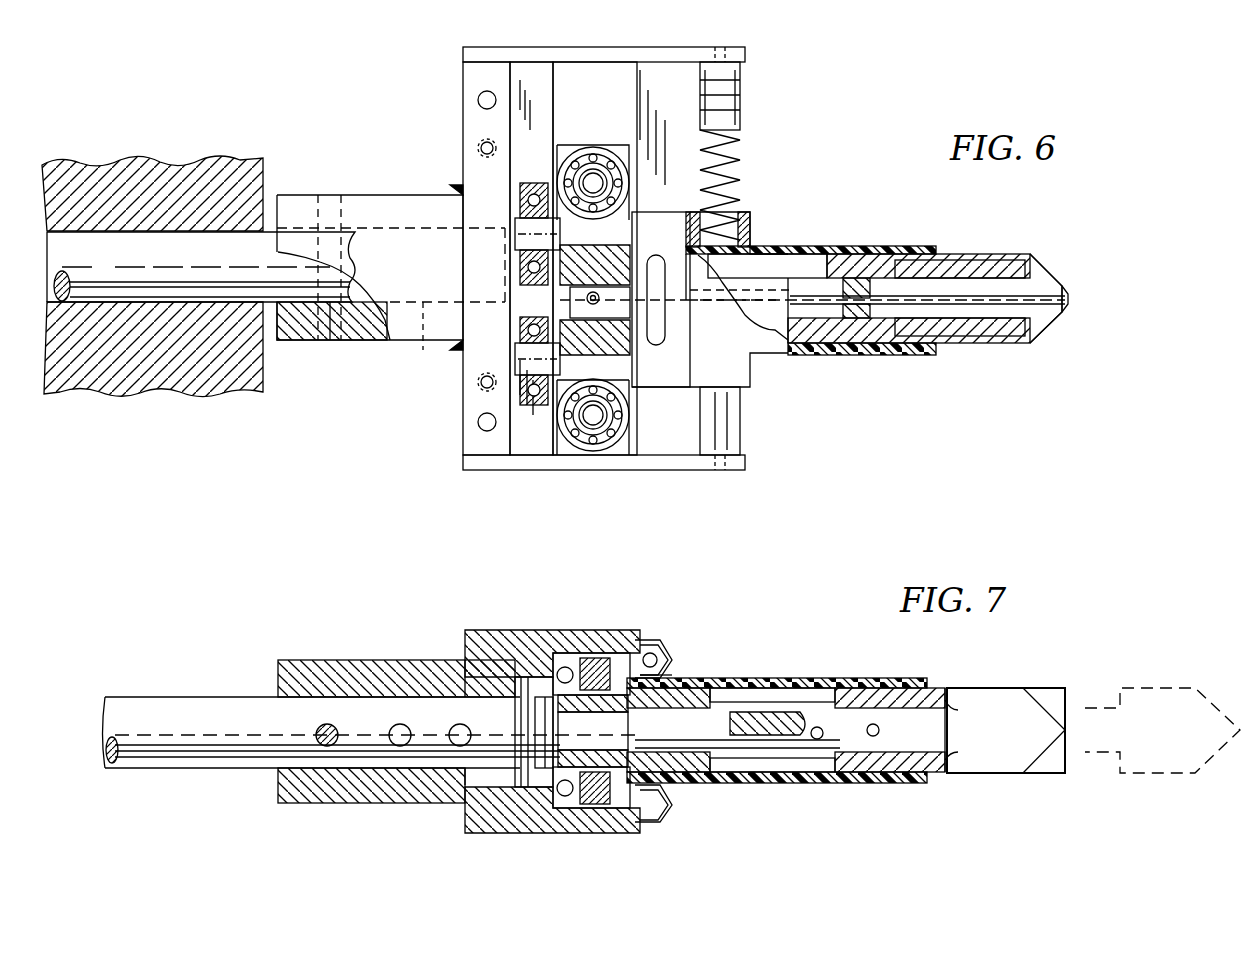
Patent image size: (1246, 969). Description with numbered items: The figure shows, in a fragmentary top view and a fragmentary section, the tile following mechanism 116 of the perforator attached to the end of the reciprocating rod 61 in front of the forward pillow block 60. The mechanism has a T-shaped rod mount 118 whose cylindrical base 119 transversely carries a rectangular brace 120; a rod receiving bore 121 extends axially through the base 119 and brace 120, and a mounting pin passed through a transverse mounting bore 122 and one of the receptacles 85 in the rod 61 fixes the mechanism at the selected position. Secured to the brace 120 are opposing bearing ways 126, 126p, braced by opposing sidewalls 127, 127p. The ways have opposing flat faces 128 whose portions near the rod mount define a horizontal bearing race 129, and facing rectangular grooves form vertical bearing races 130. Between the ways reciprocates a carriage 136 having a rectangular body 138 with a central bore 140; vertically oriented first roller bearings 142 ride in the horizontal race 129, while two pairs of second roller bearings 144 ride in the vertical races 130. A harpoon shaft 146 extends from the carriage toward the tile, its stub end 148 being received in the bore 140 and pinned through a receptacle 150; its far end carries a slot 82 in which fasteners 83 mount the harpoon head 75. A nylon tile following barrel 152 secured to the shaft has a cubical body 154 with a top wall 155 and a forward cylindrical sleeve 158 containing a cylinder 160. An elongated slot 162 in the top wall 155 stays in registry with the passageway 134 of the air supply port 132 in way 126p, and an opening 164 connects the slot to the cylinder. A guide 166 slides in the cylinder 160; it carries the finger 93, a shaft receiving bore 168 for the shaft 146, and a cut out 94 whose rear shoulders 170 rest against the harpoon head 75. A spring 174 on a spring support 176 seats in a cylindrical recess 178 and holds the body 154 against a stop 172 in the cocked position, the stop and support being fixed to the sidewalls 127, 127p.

In FIG. 6, the forward pillow block 60 is at (272, 385).
In FIG. 6, the reciprocating rod 61 is at (201, 267).
In FIG. 6, the tile following mechanism 116 is at (428, 118).
In FIG. 6, the T-shaped rod mount 118 is at (378, 195).
In FIG. 6, the cylindrical base 119 is at (300, 190).
In FIG. 7, the cylindrical base 119 is at (300, 660).
In FIG. 6, the rectangular brace 120 is at (460, 160).
In FIG. 7, the rectangular brace 120 is at (468, 785).
In FIG. 6, the rod receiving bore 121 is at (425, 350).
In FIG. 7, the rod receiving bore 121 is at (310, 803).
In FIG. 6, the mounting bore 122 is at (325, 340).
In FIG. 6, the sidewall 127 is at (620, 470).
In FIG. 6, the sidewall 127p is at (660, 47).
In FIG. 6, the flat faces 128 is at (537, 62).
In FIG. 7, the flat faces 128 is at (470, 665).
In FIG. 6, the horizontal bearing race 129 is at (535, 455).
In FIG. 7, the horizontal bearing race 129 is at (515, 787).
In FIG. 6, the carriage 136 is at (585, 130).
In FIG. 6, the rectangular body 138 is at (628, 148).
In FIG. 6, the central bore 140 is at (558, 302).
In FIG. 6, the first roller bearings 142 is at (530, 183).
In FIG. 7, the first roller bearings 142 is at (535, 695).
In FIG. 6, the second roller bearings 144 is at (568, 148).
In FIG. 7, the second roller bearings 144 is at (615, 653).
In FIG. 6, the harpoon shaft 146 is at (775, 340).
In FIG. 7, the harpoon shaft 146 is at (740, 740).
In FIG. 6, the stub end 148 is at (612, 318).
In FIG. 7, the stub end 148 is at (593, 731).
In FIG. 6, the receptacle 150 is at (640, 265).
In FIG. 6, the tile following barrel 152 is at (825, 205).
In FIG. 6, the body 154 is at (752, 387).
In FIG. 6, the top wall 155 is at (711, 299).
In FIG. 6, the cylindrical sleeve 158 is at (890, 246).
In FIG. 7, the cylindrical sleeve 158 is at (880, 678).
In FIG. 6, the cylinder 160 is at (800, 278).
In FIG. 7, the cylinder 160 is at (835, 665).
In FIG. 6, the slot 162 is at (665, 345).
In FIG. 7, the slot 162 is at (670, 760).
In FIG. 7, the opening 164 is at (690, 700).
In FIG. 6, the guide 166 is at (965, 254).
In FIG. 7, the guide 166 is at (935, 688).
In FIG. 6, the shaft receiving bore 168 is at (980, 290).
In FIG. 7, the shaft receiving bore 168 is at (940, 772).
In FIG. 7, the rear shoulders 170 is at (955, 705).
In FIG. 6, the stop 172 is at (740, 435).
In FIG. 6, the spring 174 is at (735, 165).
In FIG. 6, the spring support 176 is at (740, 100).
In FIG. 6, the cylindrical recess 178 is at (712, 235).
In FIG. 6, the slot 82 is at (930, 300).
In FIG. 6, the harpoon head 75 is at (1015, 300).
In FIG. 7, the harpoon head 75 is at (1093, 730).
In FIG. 6, the finger 93 is at (1055, 288).
In FIG. 6, the cut out 94 is at (1042, 320).
In FIG. 7, the receptacles 85 is at (325, 730).
In FIG. 7, the bearing way 126 is at (668, 815).
In FIG. 7, the bearing way 126p is at (650, 640).
In FIG. 7, the vertical bearing races 130 is at (652, 645).
In FIG. 7, the air supply port 132 is at (657, 658).
In FIG. 7, the passageway 134 is at (672, 673).
In FIG. 7, the fasteners 83 is at (879, 732).